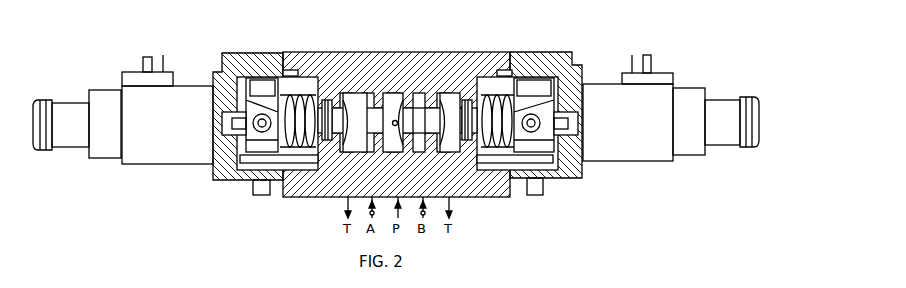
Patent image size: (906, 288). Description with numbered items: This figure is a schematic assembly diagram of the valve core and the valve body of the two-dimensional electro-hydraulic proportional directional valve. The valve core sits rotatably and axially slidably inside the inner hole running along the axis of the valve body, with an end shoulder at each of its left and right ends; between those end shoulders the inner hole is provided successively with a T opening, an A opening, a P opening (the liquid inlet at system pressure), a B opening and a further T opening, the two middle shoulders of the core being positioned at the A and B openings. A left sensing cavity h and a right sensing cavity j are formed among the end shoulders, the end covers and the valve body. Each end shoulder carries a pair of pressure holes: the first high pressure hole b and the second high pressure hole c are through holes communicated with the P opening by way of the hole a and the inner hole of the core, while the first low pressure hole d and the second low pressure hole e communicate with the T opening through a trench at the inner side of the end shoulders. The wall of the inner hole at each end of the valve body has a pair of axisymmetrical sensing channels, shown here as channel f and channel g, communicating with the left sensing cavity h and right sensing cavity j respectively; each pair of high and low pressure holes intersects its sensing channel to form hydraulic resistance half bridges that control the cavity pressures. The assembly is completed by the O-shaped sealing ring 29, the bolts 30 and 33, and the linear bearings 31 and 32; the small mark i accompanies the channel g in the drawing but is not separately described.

The hole a is at (396, 120).
The first high pressure hole b is at (316, 170).
The second high pressure hole c is at (490, 80).
The first low pressure hole d is at (329, 110).
The second low pressure hole e is at (474, 120).
The sensing channel f is at (317, 110).
The sensing channel g is at (480, 113).
The left sensing cavity h is at (239, 98).
The right return spring i is at (484, 105).
The right sensing cavity j is at (555, 98).
The O-shaped sealing ring 29 is at (216, 172).
The bolt 30 is at (259, 185).
The linear bearing 31 is at (268, 164).
The linear bearing 32 is at (520, 172).
The bolt 33 is at (533, 182).